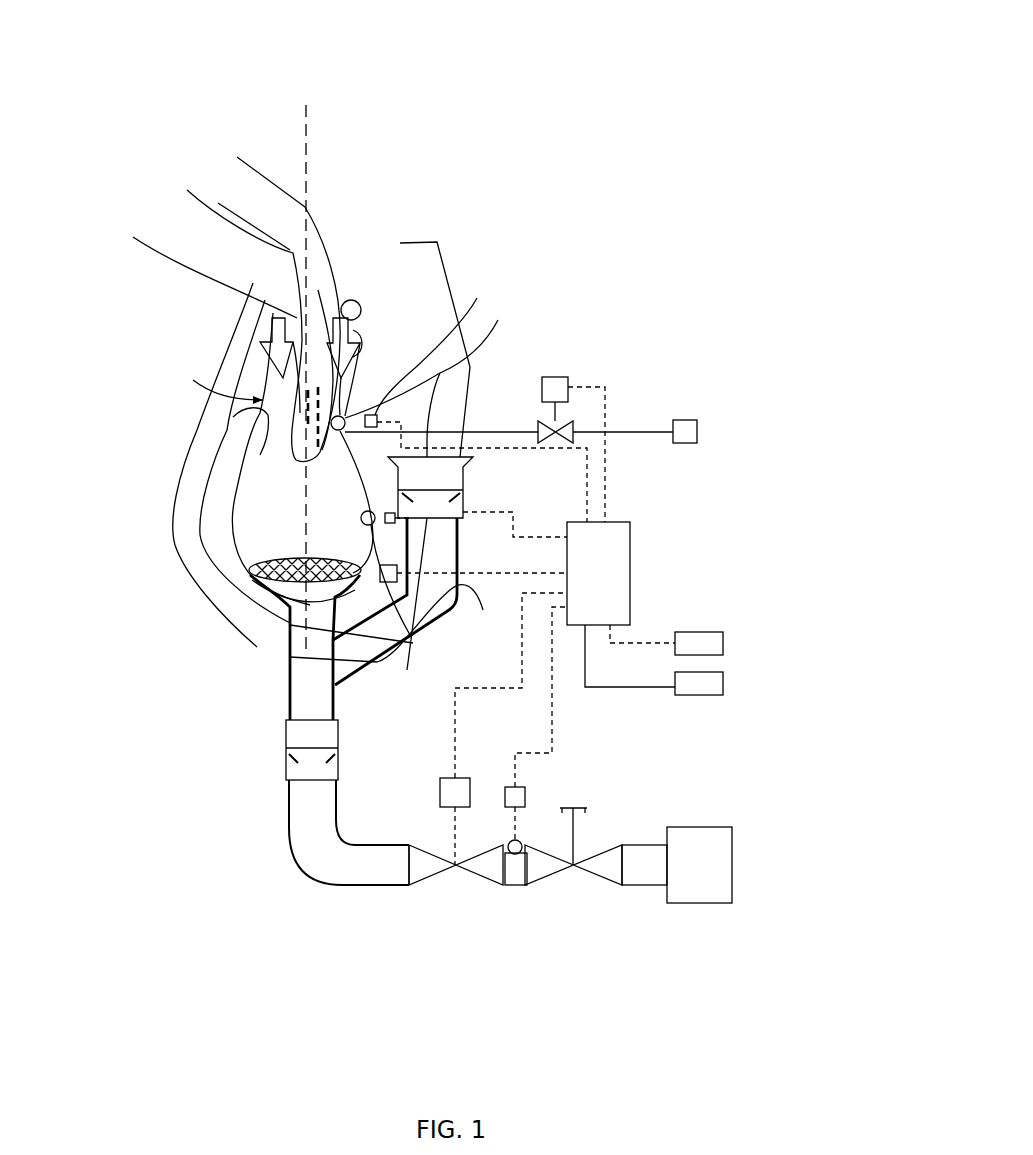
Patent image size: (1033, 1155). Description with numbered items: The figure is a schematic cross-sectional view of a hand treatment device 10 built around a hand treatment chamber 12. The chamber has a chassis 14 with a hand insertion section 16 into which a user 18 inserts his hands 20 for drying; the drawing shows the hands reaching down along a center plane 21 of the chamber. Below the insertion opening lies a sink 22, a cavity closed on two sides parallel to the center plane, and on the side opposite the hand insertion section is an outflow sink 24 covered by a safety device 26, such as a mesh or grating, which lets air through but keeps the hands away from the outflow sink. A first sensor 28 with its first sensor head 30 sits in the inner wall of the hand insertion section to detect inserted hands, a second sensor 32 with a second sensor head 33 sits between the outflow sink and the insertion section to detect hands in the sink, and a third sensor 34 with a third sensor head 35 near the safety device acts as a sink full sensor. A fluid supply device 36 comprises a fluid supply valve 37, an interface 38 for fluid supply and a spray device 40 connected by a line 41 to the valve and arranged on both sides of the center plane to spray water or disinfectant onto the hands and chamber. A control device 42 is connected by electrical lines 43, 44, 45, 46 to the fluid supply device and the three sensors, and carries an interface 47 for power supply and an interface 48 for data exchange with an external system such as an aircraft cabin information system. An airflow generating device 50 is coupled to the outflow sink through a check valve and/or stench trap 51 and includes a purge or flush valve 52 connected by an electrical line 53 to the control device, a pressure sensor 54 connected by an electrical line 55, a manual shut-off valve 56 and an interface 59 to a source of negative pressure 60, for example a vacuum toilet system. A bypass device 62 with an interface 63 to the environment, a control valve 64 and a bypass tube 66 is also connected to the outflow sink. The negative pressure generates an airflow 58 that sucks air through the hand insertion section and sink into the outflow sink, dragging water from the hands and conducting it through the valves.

The hand treatment device 10 is at (502, 111).
The hand treatment chamber 12 is at (454, 240).
The chassis 14 is at (176, 540).
The hand insertion section 16 is at (372, 322).
The user 18 is at (217, 117).
The hands 20 is at (280, 280).
The center plane 21 is at (307, 150).
The sink 22 is at (234, 487).
The outflow sink 24 is at (248, 638).
The safety device 26 is at (218, 587).
The first sensor 28 is at (434, 483).
The first sensor head 30 is at (438, 344).
The second sensor 32 is at (397, 570).
The second sensor head 33 is at (398, 586).
The third sensor 34 is at (427, 623).
The third sensor head 35 is at (383, 665).
The fluid supply device 36 is at (633, 364).
The fluid supply valve 37 is at (568, 366).
The interface for fluid supply 38 is at (685, 418).
The spray device 40 is at (213, 378).
The line 41 is at (462, 432).
The control device 42 is at (642, 543).
The electrical line 43 is at (610, 457).
The electrical line 44 is at (586, 490).
The electrical line 45 is at (513, 530).
The electrical line 46 is at (490, 573).
The interface for power supply 47 is at (693, 695).
The interface for data exchange 48 is at (686, 632).
The airflow generating device 50 is at (302, 882).
The check valve and/or stench trap 51 is at (287, 730).
The valve 52 is at (457, 890).
The electrical line 53 is at (455, 722).
The pressure sensor 54 is at (527, 797).
The electrical line 55 is at (554, 724).
The manual shut-off valve 56 is at (573, 887).
The airflow 58 is at (352, 300).
The interface to source of negative pressure 59 is at (640, 842).
The source of negative pressure 60 is at (708, 918).
The bypass device 62 is at (476, 472).
The interface to environment 63 is at (480, 432).
The control valve 64 is at (466, 498).
The bypass tube 66 is at (387, 667).